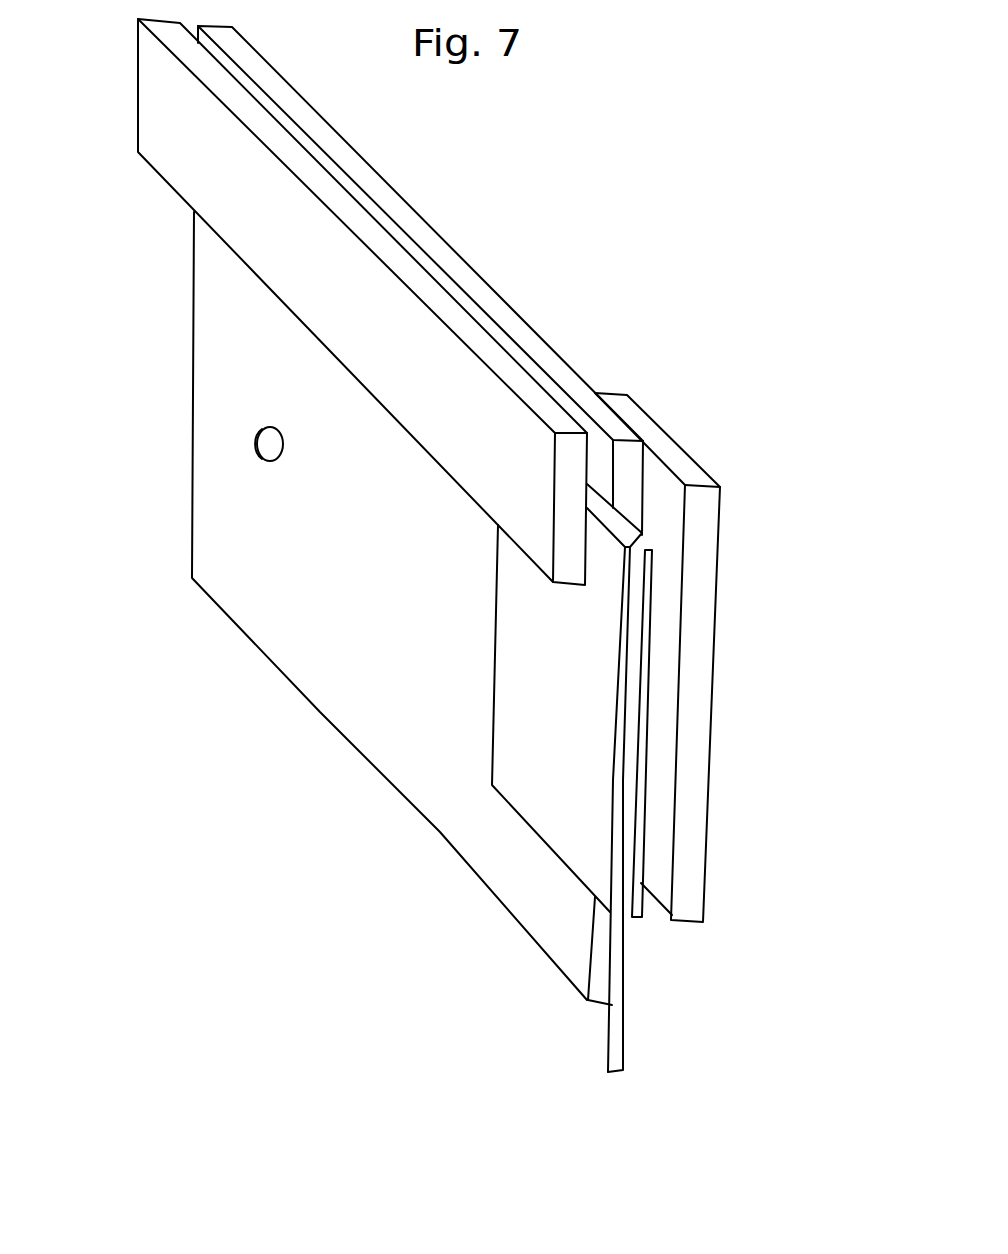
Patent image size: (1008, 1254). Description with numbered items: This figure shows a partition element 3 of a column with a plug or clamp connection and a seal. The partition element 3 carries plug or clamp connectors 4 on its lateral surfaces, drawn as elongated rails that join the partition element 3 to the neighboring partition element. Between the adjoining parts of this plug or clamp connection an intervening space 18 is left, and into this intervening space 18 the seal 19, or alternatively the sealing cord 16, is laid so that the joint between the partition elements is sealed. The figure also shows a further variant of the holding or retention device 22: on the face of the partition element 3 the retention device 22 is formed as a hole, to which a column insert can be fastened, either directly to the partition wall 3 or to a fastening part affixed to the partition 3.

The partition element 3 is at (300, 595).
The plug or clamp connector 4 is at (240, 162).
The intervening space 18 is at (592, 478).
The seal 19 is at (748, 732).
The sealing cord 16 is at (608, 517).
The retention device 22 is at (250, 452).